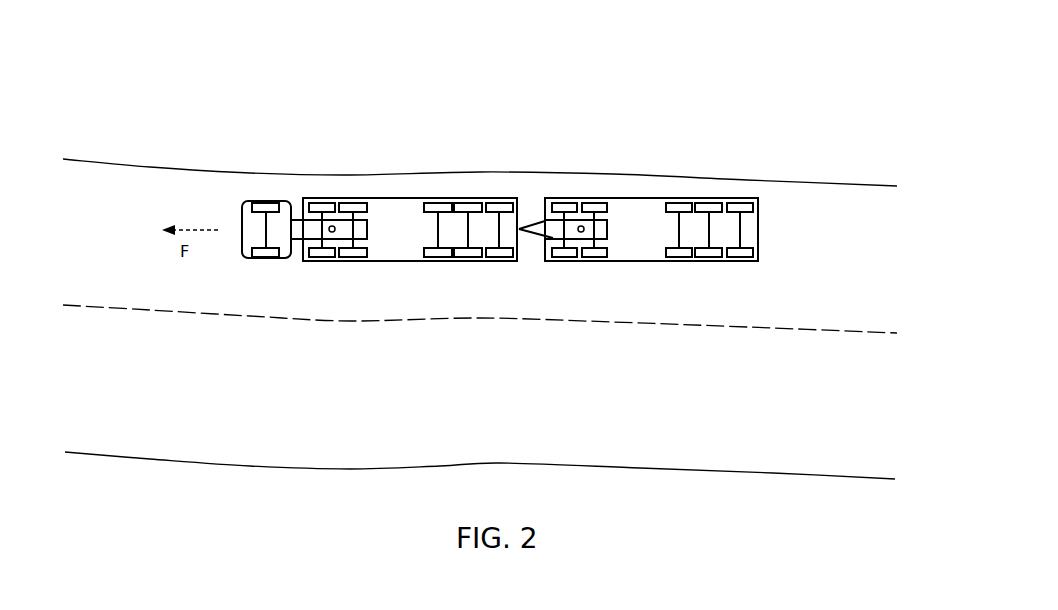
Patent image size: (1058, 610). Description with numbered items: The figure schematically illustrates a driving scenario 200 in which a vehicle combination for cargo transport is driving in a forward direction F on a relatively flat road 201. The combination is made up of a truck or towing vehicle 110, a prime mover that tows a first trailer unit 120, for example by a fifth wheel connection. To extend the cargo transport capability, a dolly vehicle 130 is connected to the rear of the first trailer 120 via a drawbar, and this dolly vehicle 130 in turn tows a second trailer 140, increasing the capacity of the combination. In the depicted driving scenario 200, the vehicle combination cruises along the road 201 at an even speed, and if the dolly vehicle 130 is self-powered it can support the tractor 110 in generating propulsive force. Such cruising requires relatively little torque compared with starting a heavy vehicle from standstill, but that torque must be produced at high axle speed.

The driving scenario 200 is at (132, 83).
The road 201 is at (118, 227).
The towing vehicle 110 is at (280, 259).
The first trailer unit 120 is at (385, 262).
The dolly vehicle 130 is at (549, 240).
The second trailer 140 is at (648, 262).